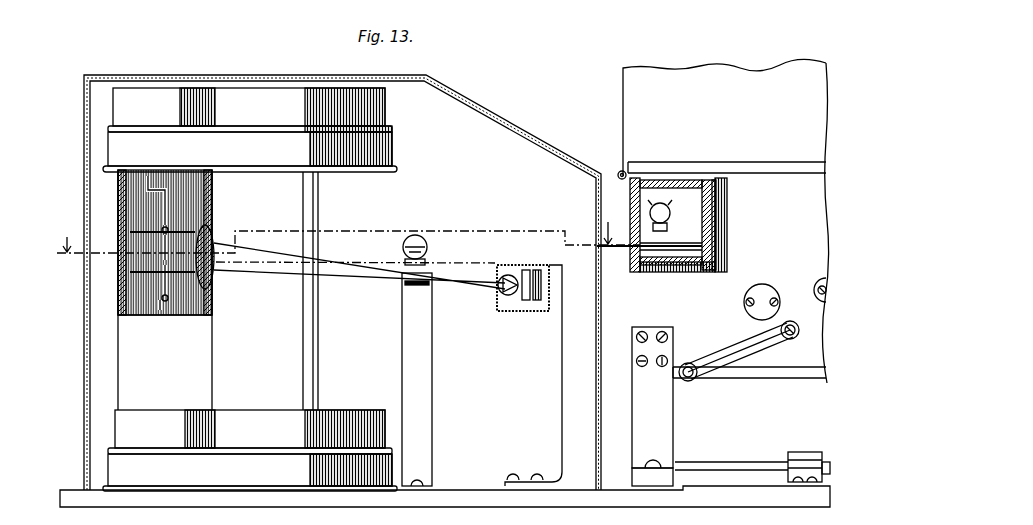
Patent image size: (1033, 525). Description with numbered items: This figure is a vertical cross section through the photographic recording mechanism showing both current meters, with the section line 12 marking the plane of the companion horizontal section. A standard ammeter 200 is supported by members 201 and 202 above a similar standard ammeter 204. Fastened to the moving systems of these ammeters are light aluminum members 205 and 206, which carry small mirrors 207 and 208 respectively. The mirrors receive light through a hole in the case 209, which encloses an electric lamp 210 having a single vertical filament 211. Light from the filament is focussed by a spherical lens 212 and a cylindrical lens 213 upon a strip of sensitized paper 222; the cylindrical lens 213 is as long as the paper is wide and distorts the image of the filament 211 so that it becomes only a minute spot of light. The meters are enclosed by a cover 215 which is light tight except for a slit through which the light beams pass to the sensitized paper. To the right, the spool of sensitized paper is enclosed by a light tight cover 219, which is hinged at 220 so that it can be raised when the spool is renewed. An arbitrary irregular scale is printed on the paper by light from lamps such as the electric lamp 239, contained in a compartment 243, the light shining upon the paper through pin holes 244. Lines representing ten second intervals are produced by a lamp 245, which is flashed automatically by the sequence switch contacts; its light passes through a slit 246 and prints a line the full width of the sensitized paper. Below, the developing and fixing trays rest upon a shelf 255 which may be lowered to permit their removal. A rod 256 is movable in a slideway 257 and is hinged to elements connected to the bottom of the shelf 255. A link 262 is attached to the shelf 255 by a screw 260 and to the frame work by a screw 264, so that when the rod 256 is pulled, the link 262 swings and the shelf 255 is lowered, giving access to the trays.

The section line 12— 12 is at (348, 227).
The standard ammeter 200 is at (276, 100).
The supporting member 201 is at (193, 369).
The supporting member 202 is at (305, 347).
The standard ammeter 204 is at (262, 406).
The light aluminum member 205 is at (200, 197).
The light aluminum member 206 is at (198, 310).
The small mirror 207 is at (165, 235).
The small mirror 208 is at (165, 270).
The case 209 is at (510, 310).
The electric lamp 210 is at (505, 295).
The filament 211 is at (500, 283).
The spherical lens 212 is at (213, 240).
The cylindrical lens 213 is at (655, 275).
The cover 215 is at (466, 99).
The light tight cover 219 is at (623, 108).
The hinge 220 is at (623, 170).
The strip of sensitized paper 222 is at (722, 268).
The electric lamp 239 is at (662, 205).
The compartment 243 is at (697, 196).
The pin holes 244 is at (716, 213).
The lamp 245 is at (412, 240).
The slit 246 is at (628, 247).
The shelf 255 is at (775, 372).
The rod 256 is at (755, 462).
The slideway 257 is at (812, 440).
The screw 260 is at (690, 381).
The link 262 is at (735, 350).
The screw 264 is at (795, 339).